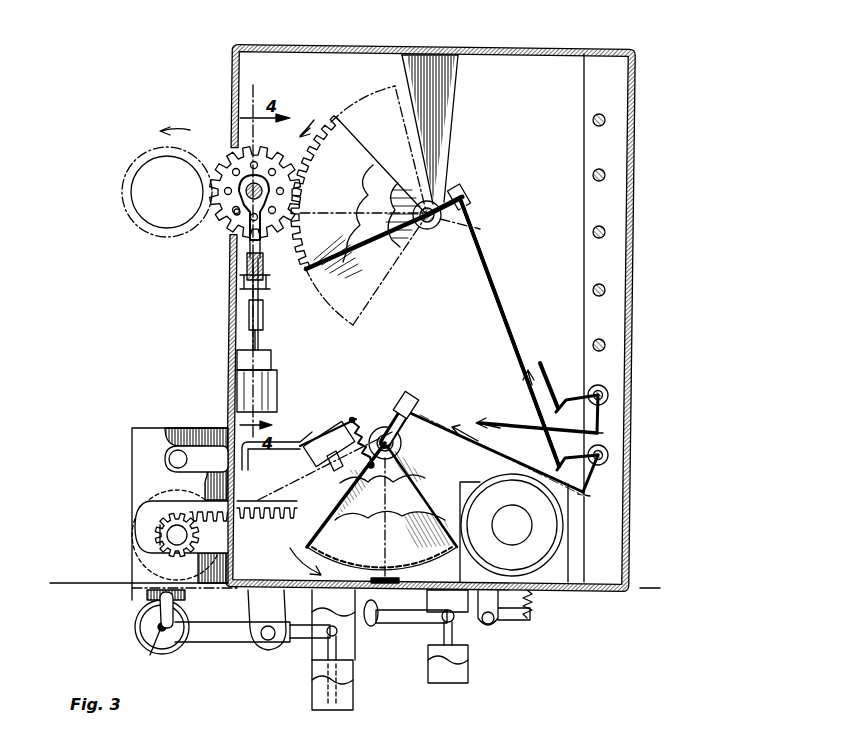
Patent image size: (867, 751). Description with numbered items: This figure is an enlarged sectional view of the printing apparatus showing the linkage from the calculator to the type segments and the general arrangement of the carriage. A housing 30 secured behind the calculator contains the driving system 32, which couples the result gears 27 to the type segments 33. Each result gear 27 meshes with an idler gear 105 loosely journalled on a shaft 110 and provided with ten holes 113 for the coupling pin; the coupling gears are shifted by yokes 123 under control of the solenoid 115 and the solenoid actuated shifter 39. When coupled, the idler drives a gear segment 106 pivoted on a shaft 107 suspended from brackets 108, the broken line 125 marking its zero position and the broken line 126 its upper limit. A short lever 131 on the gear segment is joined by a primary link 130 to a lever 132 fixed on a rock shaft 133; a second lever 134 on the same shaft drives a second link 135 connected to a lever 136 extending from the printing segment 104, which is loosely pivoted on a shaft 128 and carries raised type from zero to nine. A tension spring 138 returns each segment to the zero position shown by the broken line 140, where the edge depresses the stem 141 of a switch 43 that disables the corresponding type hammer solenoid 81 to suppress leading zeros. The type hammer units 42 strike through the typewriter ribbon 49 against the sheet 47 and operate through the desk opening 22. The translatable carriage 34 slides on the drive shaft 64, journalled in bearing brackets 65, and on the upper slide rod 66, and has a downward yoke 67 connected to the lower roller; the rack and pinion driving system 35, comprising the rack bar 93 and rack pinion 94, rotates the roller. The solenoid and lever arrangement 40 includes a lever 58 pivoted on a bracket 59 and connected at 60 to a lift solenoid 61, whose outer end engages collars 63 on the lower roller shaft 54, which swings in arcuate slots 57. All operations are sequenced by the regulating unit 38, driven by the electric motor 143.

The second opening 22 is at (386, 612).
The result gears 27 is at (160, 236).
The housing 30 is at (636, 240).
The driving system 32 is at (352, 138).
The type segments 33 is at (327, 510).
The translatable carriage 34 is at (169, 422).
The rack and pinion driving system 35 is at (263, 496).
The regulating unit 38 is at (584, 556).
The solenoid actuated shifter 39 is at (272, 306).
The solenoid and lever arrangement 40 is at (294, 654).
The type hammer units 42 is at (417, 641).
The type segment switches 43 is at (326, 428).
The sheet 47 is at (100, 582).
The typewriter ribbon 49 is at (380, 626).
The shaft 54 is at (161, 645).
The arcuate slots 57 is at (158, 604).
The lever 58 is at (216, 644).
The bracket 59 is at (258, 608).
The pivotal connection 60 is at (327, 628).
The lift solenoid 61 is at (344, 695).
The collars 63 is at (145, 637).
The drive shaft 64 is at (163, 525).
The bearing brackets 65 is at (208, 542).
The upper slide rod 66 is at (168, 462).
The yoke 67 is at (140, 620).
The type hammer solenoids 81 is at (460, 663).
The rack bar 93 is at (170, 504).
The rack pinion 94 is at (158, 536).
The printing segments 104 is at (418, 500).
The idler gear 105 is at (230, 168).
The gear segment 106 is at (336, 240).
The shaft 107 is at (432, 230).
The brackets 108 is at (456, 79).
The shaft 110 is at (255, 166).
The holes 113 is at (237, 214).
The solenoid 115 is at (272, 360).
The yokes 123 is at (264, 258).
The broken line 125 is at (395, 286).
The broken line 126 is at (405, 142).
The shaft 128 is at (401, 443).
The primary link 130 is at (498, 300).
The short lever 131 is at (462, 190).
The lever 132 is at (568, 400).
The rock shaft 133 is at (606, 175).
The second lever 134 is at (598, 432).
The second link 135 is at (498, 420).
The lever 136 is at (404, 398).
The tension spring 138 is at (370, 420).
The broken line 140 is at (292, 482).
The stem 141 is at (338, 470).
The electric motor 143 is at (560, 514).